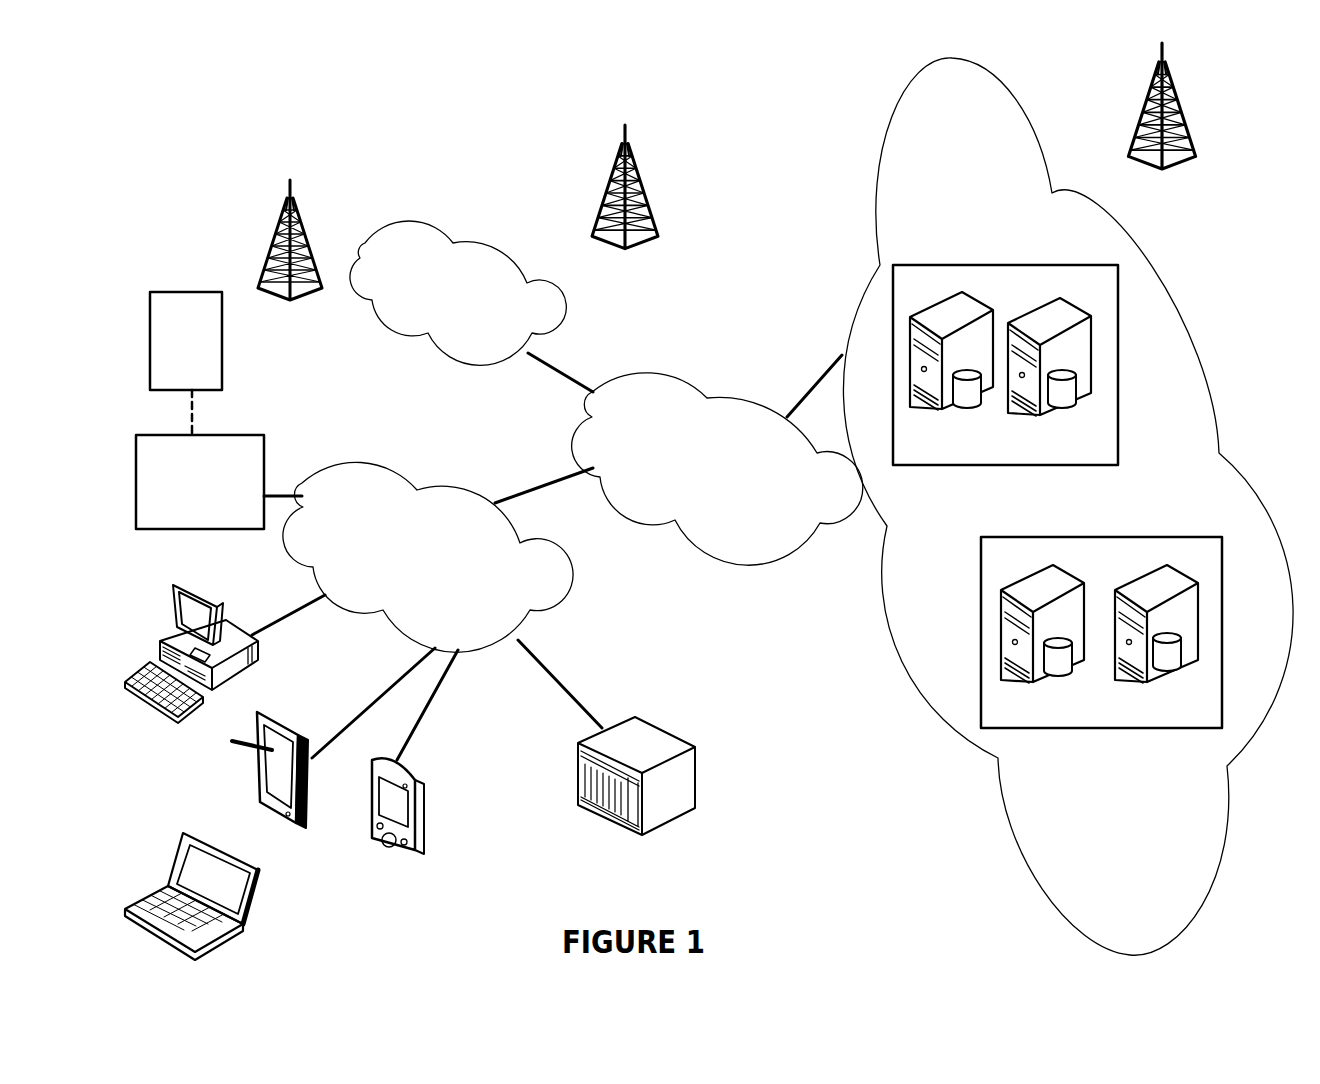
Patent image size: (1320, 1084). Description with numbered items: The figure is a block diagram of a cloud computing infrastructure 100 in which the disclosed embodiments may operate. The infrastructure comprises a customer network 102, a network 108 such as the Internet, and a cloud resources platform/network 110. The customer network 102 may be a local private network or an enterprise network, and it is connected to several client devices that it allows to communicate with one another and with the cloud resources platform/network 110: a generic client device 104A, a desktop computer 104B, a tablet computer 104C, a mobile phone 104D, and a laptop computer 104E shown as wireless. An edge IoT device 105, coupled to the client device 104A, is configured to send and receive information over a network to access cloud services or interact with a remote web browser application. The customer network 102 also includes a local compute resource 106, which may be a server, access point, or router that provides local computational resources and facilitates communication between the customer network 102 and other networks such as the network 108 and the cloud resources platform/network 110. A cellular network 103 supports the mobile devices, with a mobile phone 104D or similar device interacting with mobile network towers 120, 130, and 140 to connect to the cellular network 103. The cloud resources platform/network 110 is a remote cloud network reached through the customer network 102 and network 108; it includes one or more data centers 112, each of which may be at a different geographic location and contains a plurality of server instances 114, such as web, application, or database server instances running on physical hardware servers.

The cloud computing infrastructure 100 is at (364, 150).
The customer network 102 is at (390, 465).
The cellular network 103 is at (480, 247).
The client device 104A is at (228, 435).
The desktop computer 104B is at (203, 588).
The tablet computer 104C is at (282, 713).
The mobile phone 104D is at (415, 783).
The laptop computer 104E is at (258, 872).
The edge IoT device 105 is at (163, 292).
The local compute resource 106 is at (635, 717).
The network 108 is at (650, 373).
The cloud resources platform/network 110 is at (1162, 267).
The data center 112 is at (935, 267).
The server instance 114 is at (960, 406).
The mobile network tower 120 is at (625, 207).
The mobile network tower 130 is at (290, 263).
The mobile network tower 140 is at (1161, 125).